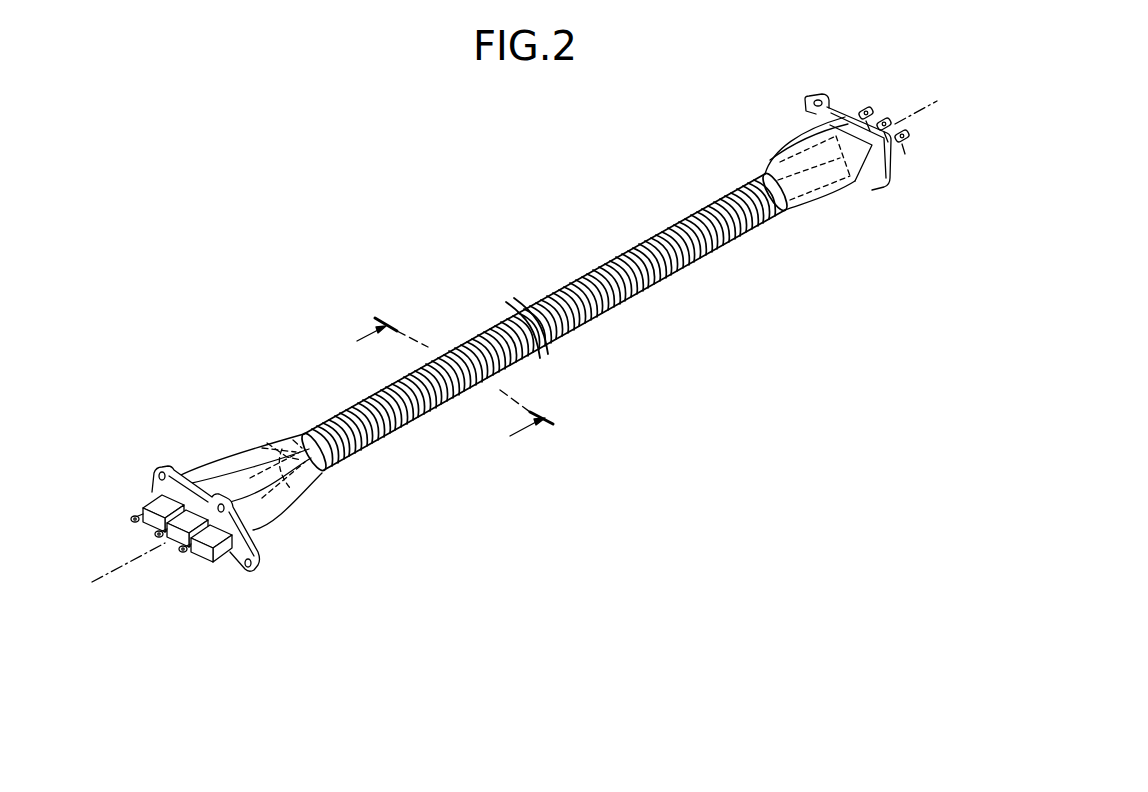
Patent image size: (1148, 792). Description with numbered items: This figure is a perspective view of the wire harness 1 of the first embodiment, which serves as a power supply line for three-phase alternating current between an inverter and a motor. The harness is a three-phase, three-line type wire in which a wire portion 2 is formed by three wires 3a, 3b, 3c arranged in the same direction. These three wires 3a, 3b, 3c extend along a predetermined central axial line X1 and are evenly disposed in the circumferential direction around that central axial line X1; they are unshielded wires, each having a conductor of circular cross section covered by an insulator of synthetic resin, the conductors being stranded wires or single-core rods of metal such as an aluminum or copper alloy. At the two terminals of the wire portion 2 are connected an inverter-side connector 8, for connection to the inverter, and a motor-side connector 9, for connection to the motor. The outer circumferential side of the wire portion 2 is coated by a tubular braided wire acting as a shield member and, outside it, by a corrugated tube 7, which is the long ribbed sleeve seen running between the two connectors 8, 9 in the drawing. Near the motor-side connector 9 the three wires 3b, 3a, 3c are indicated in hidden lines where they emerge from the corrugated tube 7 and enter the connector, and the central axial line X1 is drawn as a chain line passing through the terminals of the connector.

The wire harness 1 is at (266, 276).
The wire portion 2 is at (290, 389).
The wire 3a is at (267, 443).
The wire 3b is at (262, 448).
The wire 3c is at (293, 440).
The corrugated tube 7 is at (620, 305).
The inverter-side connector 8 is at (852, 187).
The motor-side connector 9 is at (282, 523).
The central axial line X1 is at (152, 560).